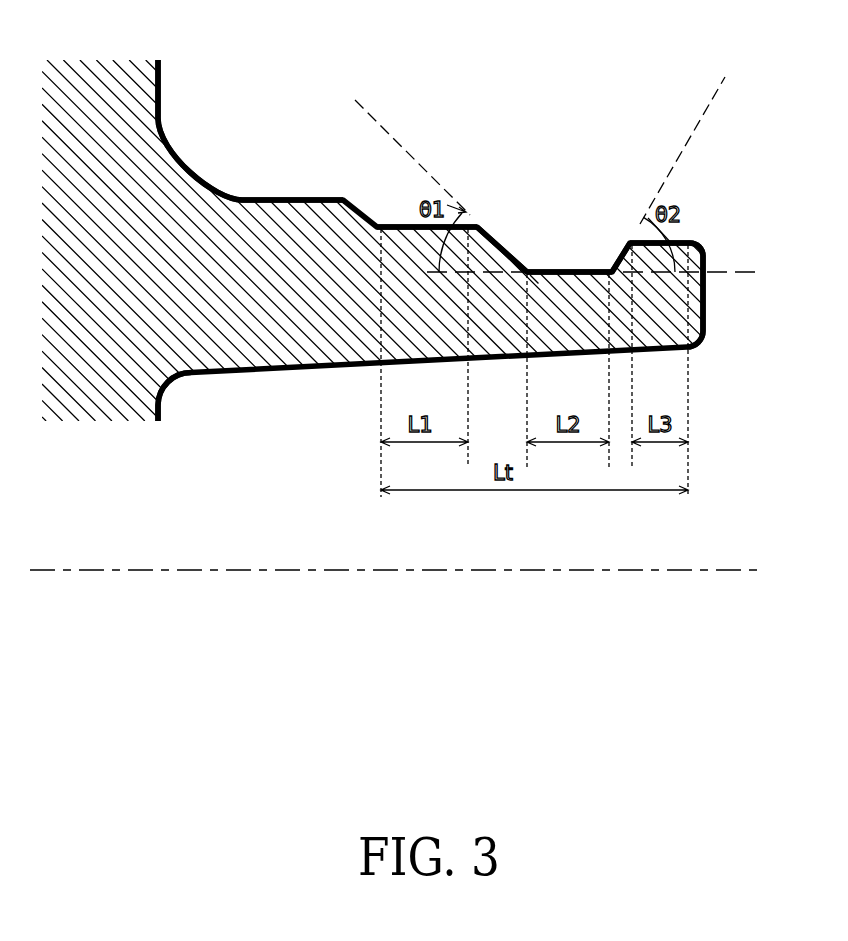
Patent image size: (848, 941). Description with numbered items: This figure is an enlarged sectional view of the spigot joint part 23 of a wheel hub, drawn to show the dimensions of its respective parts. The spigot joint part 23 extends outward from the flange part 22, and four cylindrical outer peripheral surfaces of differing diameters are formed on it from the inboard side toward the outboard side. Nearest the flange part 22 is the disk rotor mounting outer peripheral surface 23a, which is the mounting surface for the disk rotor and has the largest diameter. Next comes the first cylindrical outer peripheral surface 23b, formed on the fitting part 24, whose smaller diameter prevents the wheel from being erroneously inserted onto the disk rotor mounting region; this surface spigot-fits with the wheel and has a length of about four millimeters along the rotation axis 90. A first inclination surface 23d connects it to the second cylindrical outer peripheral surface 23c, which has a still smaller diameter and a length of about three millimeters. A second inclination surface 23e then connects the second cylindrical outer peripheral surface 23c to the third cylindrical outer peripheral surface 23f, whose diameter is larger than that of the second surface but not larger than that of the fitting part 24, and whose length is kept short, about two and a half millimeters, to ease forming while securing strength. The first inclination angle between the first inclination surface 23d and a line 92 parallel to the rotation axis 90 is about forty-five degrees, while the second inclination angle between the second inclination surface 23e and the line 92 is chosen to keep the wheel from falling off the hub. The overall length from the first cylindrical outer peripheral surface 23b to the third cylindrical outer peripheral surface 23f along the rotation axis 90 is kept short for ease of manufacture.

The flange part 22 is at (112, 78).
The spigot joint part 23 is at (706, 316).
The disk rotor mounting outer peripheral surface 23a is at (313, 197).
The first cylindrical outer peripheral surface 23b is at (398, 224).
The second cylindrical outer peripheral surface 23c is at (565, 268).
The first inclination surface 23d is at (506, 253).
The second inclination surface 23e is at (617, 265).
The third cylindrical outer peripheral surface 23f is at (677, 242).
The fitting part 24 is at (418, 243).
The rotation axis 90 is at (718, 570).
The line parallel to the rotation axis 92 is at (738, 270).